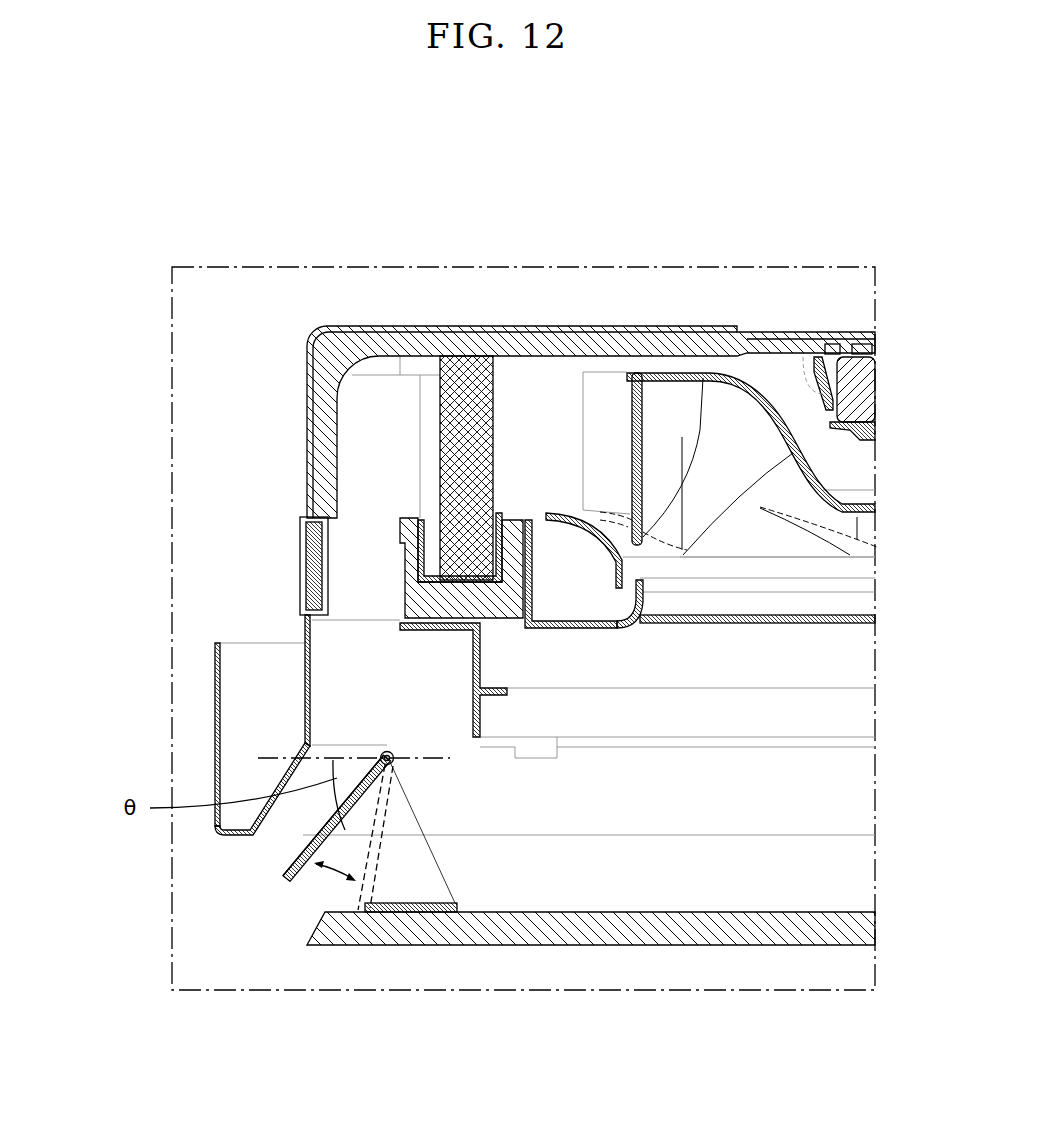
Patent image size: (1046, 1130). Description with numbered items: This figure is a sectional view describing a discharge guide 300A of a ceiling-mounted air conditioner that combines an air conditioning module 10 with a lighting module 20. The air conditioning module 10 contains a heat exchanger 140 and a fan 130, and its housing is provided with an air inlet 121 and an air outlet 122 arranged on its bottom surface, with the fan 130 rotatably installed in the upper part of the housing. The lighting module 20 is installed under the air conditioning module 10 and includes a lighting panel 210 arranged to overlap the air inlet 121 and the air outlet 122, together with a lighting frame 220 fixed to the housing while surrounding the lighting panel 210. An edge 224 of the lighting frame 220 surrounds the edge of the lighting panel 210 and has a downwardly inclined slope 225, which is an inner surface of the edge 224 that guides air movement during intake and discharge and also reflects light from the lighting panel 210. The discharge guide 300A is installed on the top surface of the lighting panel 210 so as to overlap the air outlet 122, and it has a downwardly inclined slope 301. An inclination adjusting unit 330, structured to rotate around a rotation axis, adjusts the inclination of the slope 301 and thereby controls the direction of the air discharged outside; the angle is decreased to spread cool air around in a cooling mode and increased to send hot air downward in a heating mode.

The air conditioning module 10 is at (308, 317).
The heat exchanger 140 is at (467, 372).
The fan 130 is at (765, 430).
The air outlet 122 is at (370, 572).
The air inlet 121 is at (812, 605).
The lighting module 20 is at (185, 738).
The edge 224 is at (300, 718).
The lighting frame 220 is at (200, 772).
The slope 225 is at (265, 805).
The inclination adjusting unit 330 is at (300, 874).
The slope 301 is at (278, 866).
The discharge guide 300A is at (347, 838).
The lighting panel 210 is at (577, 925).